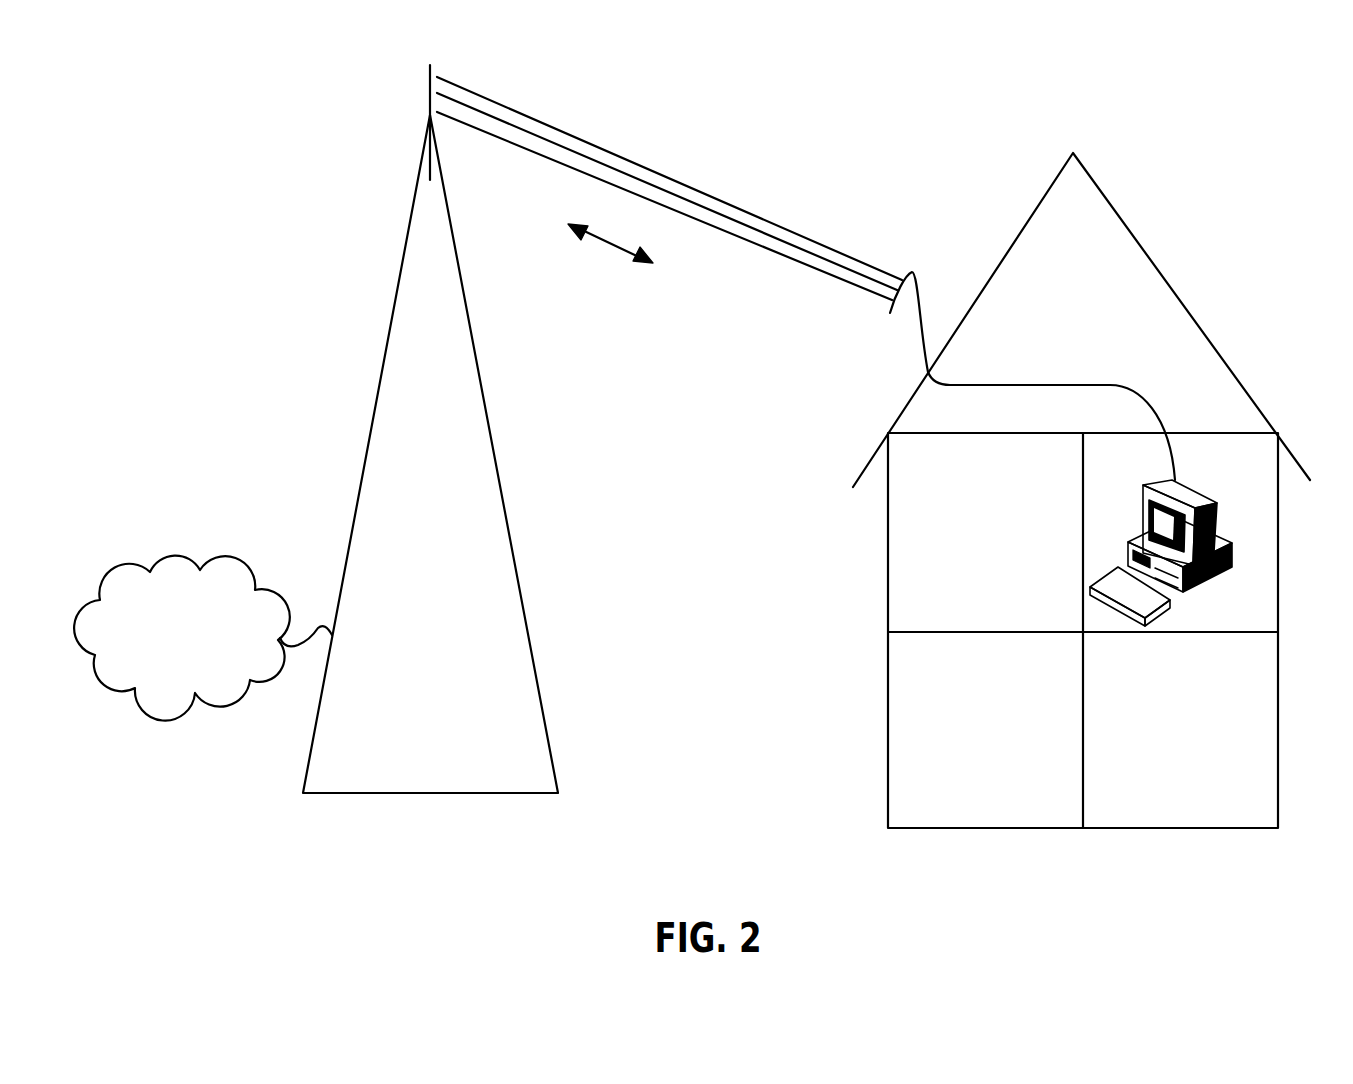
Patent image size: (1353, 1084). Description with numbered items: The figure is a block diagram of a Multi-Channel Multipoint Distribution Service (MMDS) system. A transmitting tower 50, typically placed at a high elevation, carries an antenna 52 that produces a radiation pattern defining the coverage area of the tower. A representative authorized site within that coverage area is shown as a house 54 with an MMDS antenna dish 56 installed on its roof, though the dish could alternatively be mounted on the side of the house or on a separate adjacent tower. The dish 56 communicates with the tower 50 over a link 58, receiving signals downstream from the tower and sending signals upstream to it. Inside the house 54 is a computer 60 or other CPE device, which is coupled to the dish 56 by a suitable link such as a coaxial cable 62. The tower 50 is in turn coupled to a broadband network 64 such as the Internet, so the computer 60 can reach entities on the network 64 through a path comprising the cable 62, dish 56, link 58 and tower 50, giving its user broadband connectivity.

The transmitting tower 50 is at (520, 585).
The antenna 52 is at (428, 93).
The house 54 is at (1278, 733).
The MMDS antenna dish 56 is at (915, 292).
The link 58 is at (608, 243).
The computer 60 is at (1202, 492).
The coaxial cable 62 is at (1077, 384).
The broadband network 64 is at (207, 563).